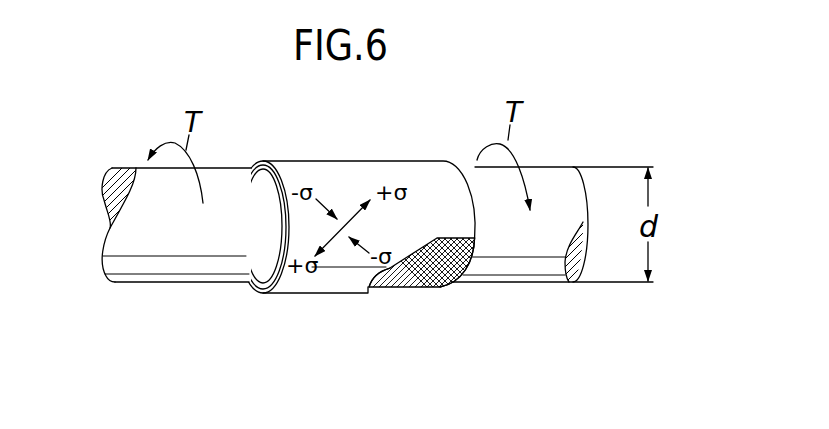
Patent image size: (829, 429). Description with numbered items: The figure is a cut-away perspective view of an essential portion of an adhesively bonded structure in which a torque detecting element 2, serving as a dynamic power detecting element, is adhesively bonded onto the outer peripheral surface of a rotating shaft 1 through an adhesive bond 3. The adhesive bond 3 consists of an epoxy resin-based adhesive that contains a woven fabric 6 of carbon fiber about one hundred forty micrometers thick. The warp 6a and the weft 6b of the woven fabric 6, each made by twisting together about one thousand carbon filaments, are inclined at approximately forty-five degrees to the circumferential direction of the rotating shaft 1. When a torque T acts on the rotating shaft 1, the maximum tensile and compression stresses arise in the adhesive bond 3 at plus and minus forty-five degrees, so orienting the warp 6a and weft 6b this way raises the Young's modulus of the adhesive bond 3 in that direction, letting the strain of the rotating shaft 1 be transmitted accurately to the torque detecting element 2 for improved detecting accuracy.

The rotating shaft 1 is at (544, 178).
The torque detecting element 2 is at (403, 166).
The adhesive bond 3 is at (280, 227).
The woven fabric of carbon fiber 6 is at (418, 293).
The warp 6a is at (385, 289).
The weft 6b is at (428, 288).